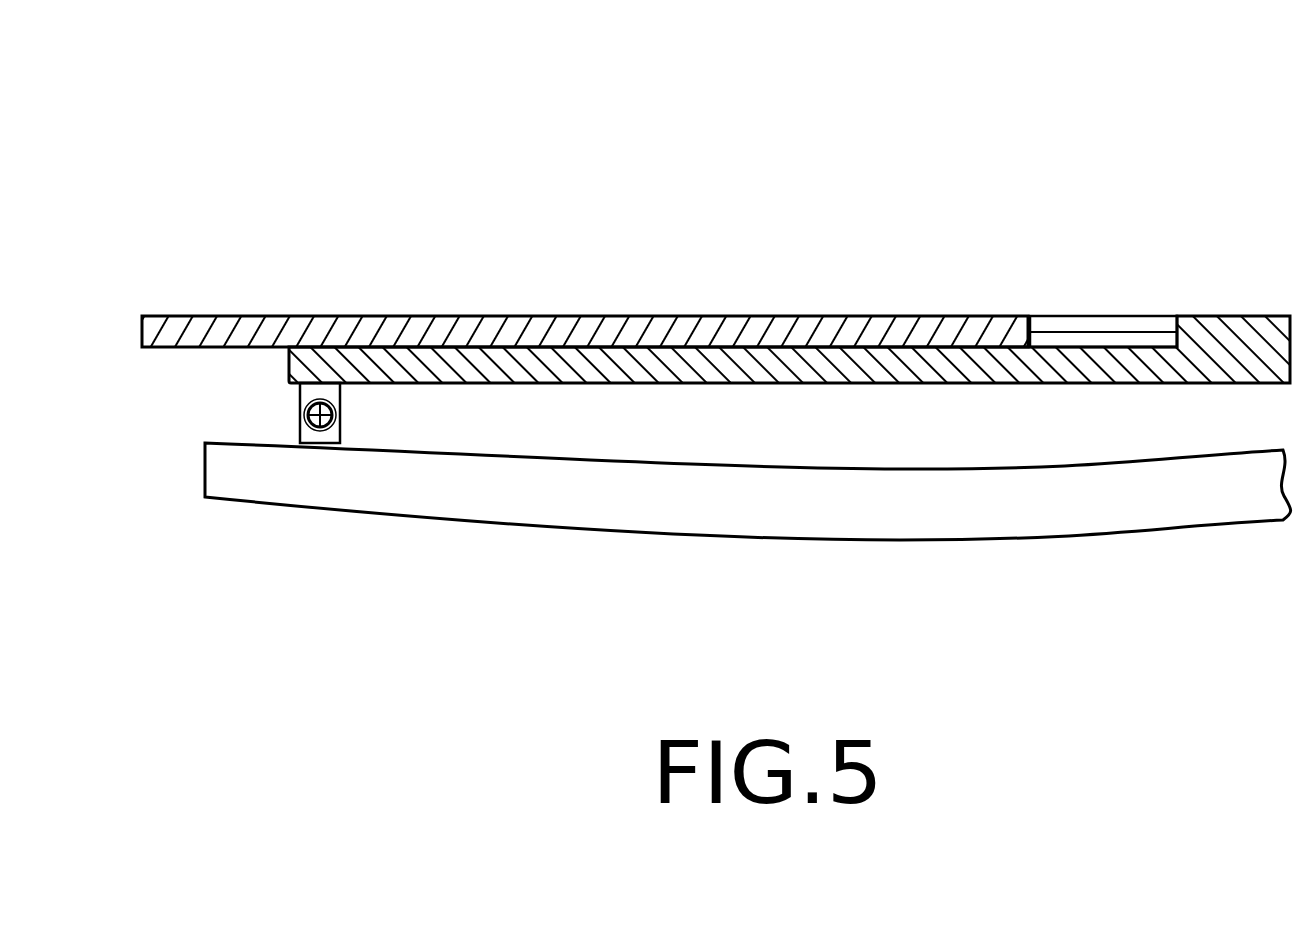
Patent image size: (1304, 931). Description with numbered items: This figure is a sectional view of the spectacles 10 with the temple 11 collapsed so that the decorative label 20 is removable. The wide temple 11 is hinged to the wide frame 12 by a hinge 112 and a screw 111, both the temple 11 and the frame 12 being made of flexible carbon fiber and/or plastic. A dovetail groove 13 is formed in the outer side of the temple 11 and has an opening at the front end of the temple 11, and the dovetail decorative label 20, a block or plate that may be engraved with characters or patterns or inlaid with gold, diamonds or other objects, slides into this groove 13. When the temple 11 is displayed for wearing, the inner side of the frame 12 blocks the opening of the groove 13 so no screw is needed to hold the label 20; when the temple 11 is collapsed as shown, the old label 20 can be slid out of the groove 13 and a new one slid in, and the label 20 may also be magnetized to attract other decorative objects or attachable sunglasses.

The spectacles 10 is at (496, 240).
The temple 11 is at (1238, 330).
The screw 111 is at (303, 415).
The hinge 112 is at (297, 396).
The frame 12 is at (493, 483).
The dovetail groove 13 is at (1102, 336).
The decorative label 20 is at (762, 322).